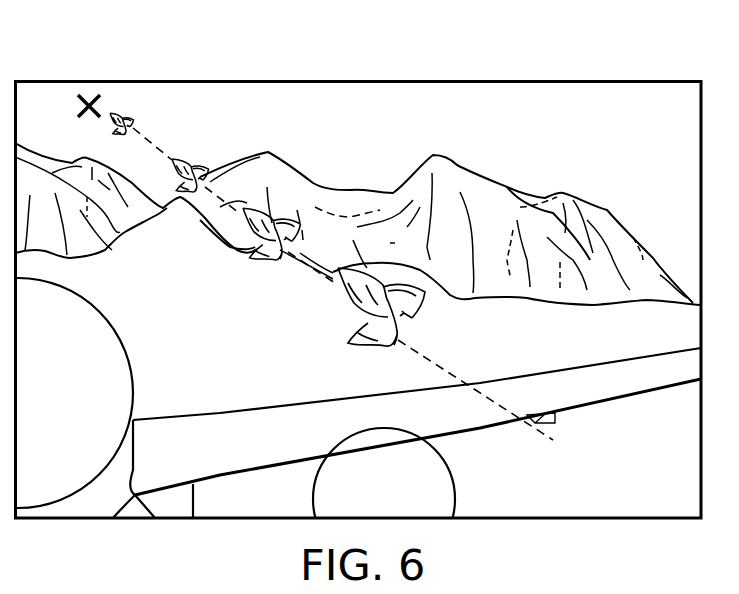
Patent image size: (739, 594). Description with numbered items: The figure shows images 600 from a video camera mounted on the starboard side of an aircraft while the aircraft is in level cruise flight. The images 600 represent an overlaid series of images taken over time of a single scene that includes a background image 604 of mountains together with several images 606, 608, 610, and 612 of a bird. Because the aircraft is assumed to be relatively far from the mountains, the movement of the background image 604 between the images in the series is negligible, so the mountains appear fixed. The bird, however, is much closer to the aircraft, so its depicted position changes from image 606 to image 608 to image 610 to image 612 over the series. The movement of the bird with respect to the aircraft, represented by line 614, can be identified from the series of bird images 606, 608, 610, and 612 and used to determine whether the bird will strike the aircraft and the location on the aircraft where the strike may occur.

The images 600 is at (488, 80).
The background image 604 is at (363, 172).
The image of bird 606 is at (133, 122).
The image of bird 608 is at (205, 170).
The image of bird 610 is at (258, 265).
The image of bird 612 is at (345, 330).
The line 614 is at (442, 358).